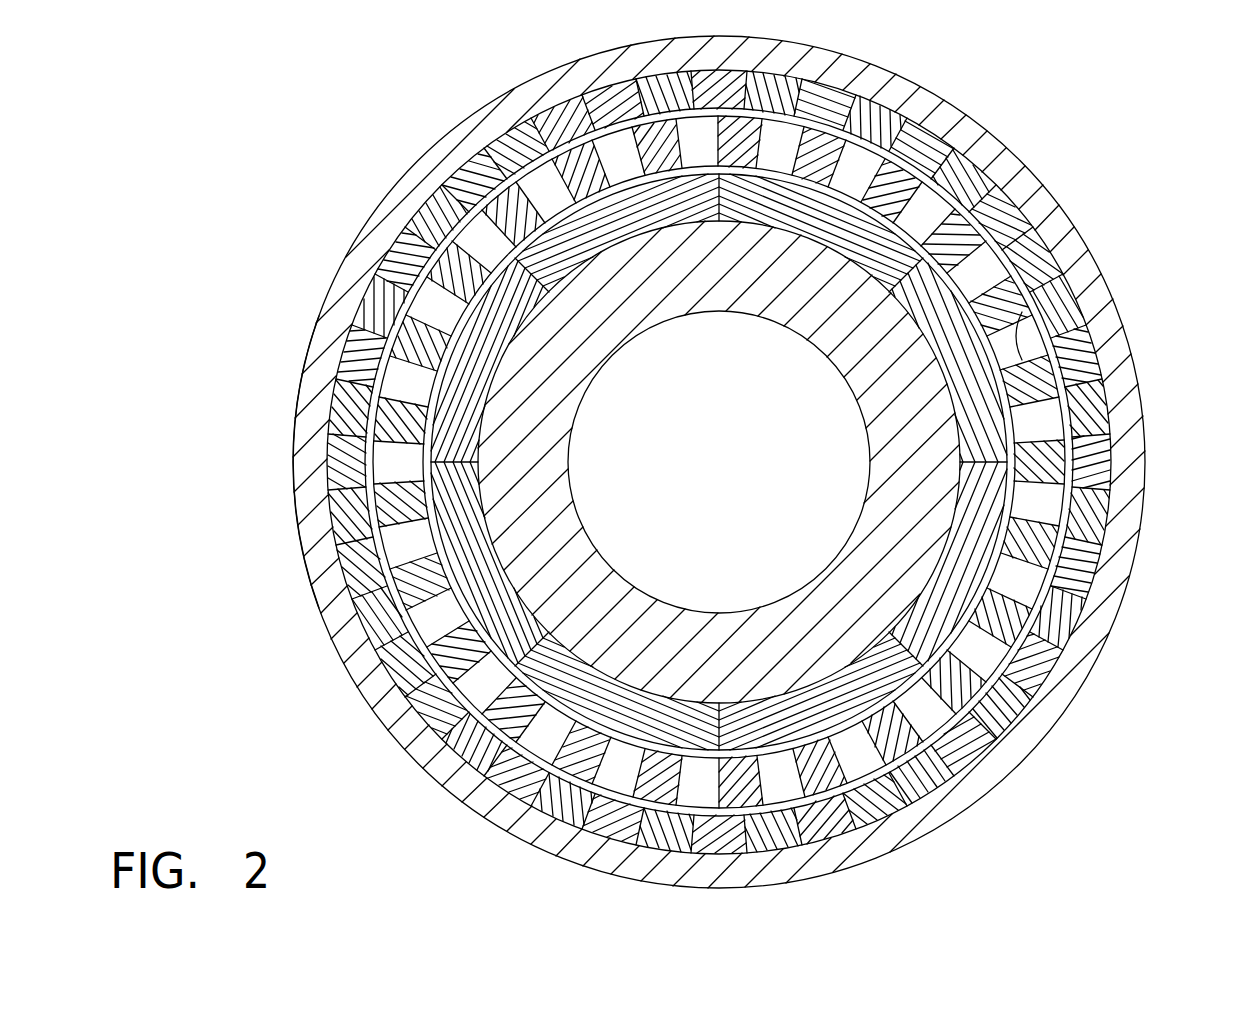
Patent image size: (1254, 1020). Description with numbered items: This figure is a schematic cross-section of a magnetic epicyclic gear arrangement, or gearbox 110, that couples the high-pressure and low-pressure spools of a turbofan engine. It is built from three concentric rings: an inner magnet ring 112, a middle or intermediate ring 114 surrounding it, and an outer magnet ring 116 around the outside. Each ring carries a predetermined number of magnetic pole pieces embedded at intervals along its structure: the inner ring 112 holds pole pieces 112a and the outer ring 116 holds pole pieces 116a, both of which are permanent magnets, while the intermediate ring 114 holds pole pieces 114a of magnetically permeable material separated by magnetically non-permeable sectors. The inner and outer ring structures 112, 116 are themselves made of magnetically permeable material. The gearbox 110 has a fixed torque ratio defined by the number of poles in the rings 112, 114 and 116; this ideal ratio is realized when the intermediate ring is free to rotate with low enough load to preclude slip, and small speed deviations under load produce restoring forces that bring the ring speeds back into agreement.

The magnetic epicyclic gear arrangement 110 is at (375, 128).
The inner magnet ring 112 is at (967, 508).
The magnetic pole pieces 112a is at (867, 677).
The intermediate ring 114 is at (1055, 293).
The magnetic pole pieces 114a is at (1062, 400).
The outer magnet ring 116 is at (950, 104).
The magnetic pole pieces 116a is at (318, 605).